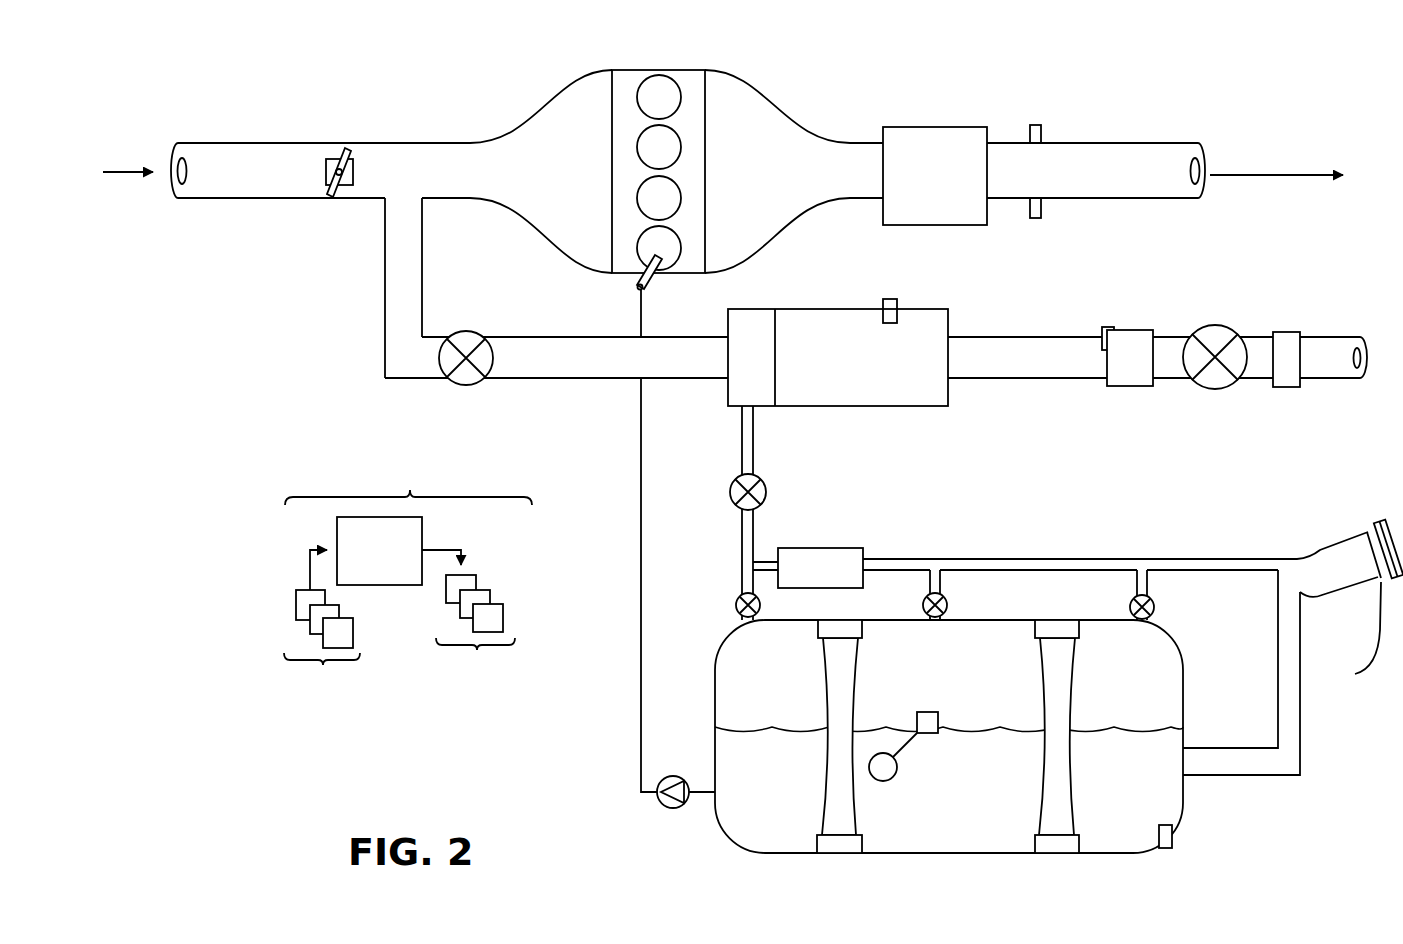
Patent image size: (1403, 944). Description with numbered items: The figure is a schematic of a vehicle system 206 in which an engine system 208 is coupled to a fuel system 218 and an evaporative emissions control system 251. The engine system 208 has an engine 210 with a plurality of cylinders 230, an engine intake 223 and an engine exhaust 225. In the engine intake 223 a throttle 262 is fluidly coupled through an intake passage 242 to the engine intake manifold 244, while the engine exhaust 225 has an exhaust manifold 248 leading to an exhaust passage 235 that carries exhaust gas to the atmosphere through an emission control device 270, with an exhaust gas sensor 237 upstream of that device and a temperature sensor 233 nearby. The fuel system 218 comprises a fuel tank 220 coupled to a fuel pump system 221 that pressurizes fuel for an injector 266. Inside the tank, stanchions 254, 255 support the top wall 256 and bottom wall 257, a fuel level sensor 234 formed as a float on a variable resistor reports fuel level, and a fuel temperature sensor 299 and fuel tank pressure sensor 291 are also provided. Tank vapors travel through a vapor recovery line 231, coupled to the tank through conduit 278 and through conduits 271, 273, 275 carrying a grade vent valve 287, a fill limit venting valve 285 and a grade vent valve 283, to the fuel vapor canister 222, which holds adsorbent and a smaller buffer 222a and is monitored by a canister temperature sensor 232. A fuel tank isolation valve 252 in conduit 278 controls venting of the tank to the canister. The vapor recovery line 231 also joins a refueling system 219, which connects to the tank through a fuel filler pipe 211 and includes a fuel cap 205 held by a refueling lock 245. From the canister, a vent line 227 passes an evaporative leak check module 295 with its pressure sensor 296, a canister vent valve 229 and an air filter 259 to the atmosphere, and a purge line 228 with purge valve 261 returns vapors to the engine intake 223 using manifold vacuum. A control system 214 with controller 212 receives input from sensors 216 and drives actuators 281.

The vehicle system 206 is at (196, 90).
The engine intake 223 is at (536, 95).
The engine intake manifold 244 is at (578, 181).
The throttle 262 is at (354, 176).
The intake passage 242 is at (372, 199).
The engine 210 is at (706, 152).
The cylinders 230 is at (682, 90).
The engine exhaust 225 is at (874, 95).
The exhaust manifold 248 is at (797, 181).
The engine system 208 is at (1003, 91).
The emission control device 270 is at (924, 128).
The exhaust gas sensor 237 is at (1031, 131).
The temperature sensor 233 is at (1031, 208).
The exhaust passage 235 is at (1150, 143).
The fuel injector 266 is at (646, 283).
The fuel system 218 is at (1234, 814).
The purge line 228 is at (588, 369).
The purge valve 261 is at (468, 332).
The fuel vapor canister 222 is at (948, 331).
The buffer 222a is at (758, 296).
The temperature sensor 232 is at (889, 298).
The vent line 227 is at (997, 367).
The pressure sensor 296 is at (1105, 326).
The evaporative leak check module 295 is at (1128, 330).
The canister vent valve 229 is at (1213, 325).
The air filter 259 is at (1290, 332).
The emissions control system 251 is at (1350, 290).
The conduit 278 is at (742, 437).
The fuel tank isolation valve 252 is at (742, 510).
The fuel tank pressure sensor 291 is at (863, 557).
The vapor recovery line 231 is at (1202, 557).
The top wall 256 is at (988, 618).
The fuel filler pipe 211 is at (1302, 668).
The refueling system 219 is at (1349, 513).
The fuel cap 205 is at (1381, 521).
The refueling lock 245 is at (1351, 636).
The fuel tank 220 is at (1184, 719).
The stanchion 254 is at (828, 742).
The stanchion 255 is at (1069, 742).
The bottom wall 257 is at (953, 856).
The fuel level sensor 234 is at (927, 712).
The fuel pump system 221 is at (672, 778).
The conduit 271 is at (757, 582).
The grade vent valve 287 is at (736, 603).
The conduit 273 is at (930, 580).
The fill limit venting valve 285 is at (948, 604).
The conduit 275 is at (1135, 580).
The grade vent valve 283 is at (1170, 591).
The fuel temperature sensor 299 is at (1168, 848).
The control system 214 is at (408, 475).
The controller 212 is at (385, 553).
The sensors 216 is at (322, 651).
The actuators 281 is at (477, 636).